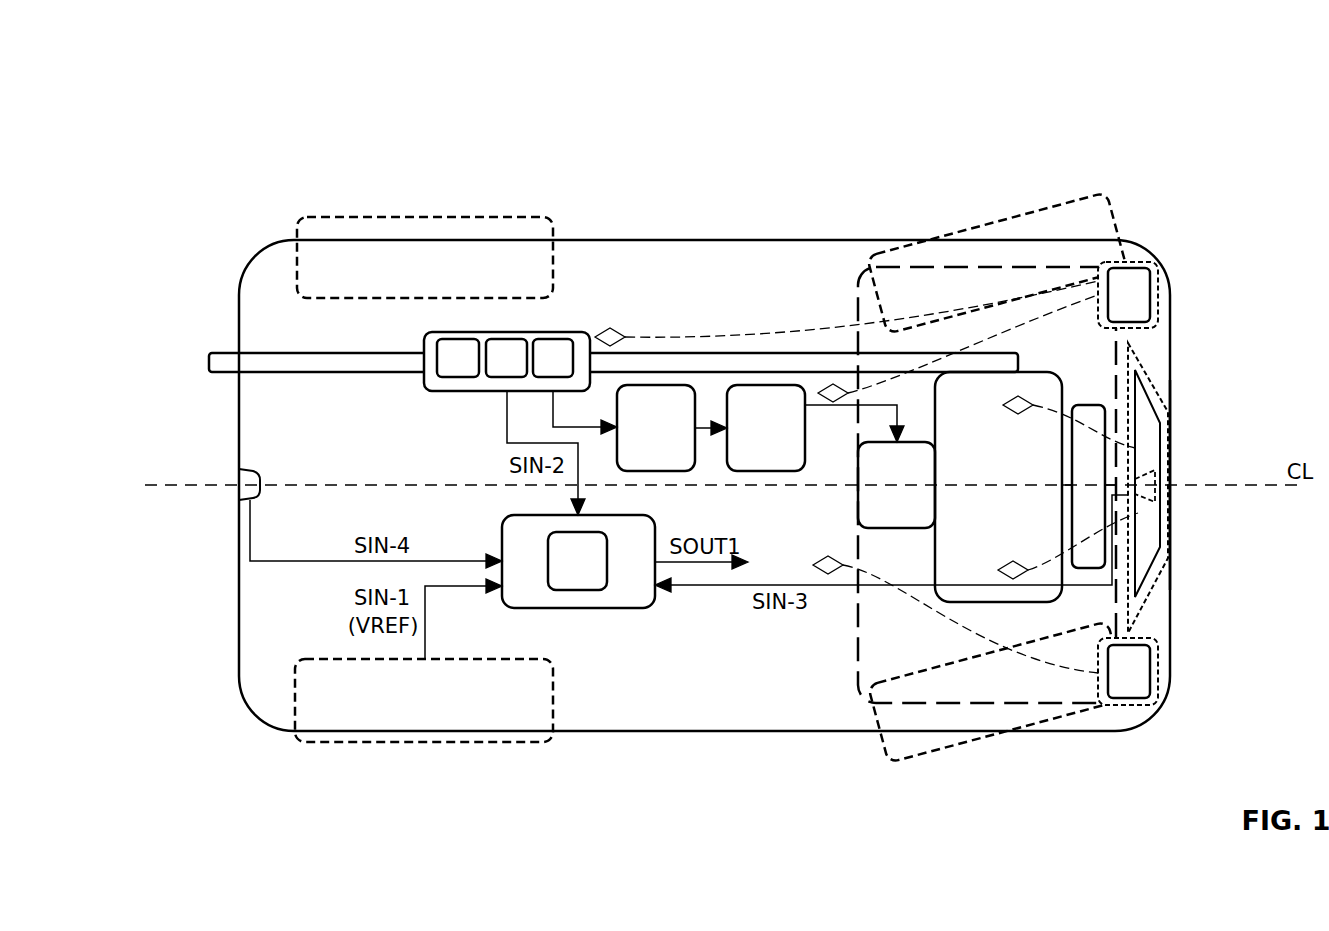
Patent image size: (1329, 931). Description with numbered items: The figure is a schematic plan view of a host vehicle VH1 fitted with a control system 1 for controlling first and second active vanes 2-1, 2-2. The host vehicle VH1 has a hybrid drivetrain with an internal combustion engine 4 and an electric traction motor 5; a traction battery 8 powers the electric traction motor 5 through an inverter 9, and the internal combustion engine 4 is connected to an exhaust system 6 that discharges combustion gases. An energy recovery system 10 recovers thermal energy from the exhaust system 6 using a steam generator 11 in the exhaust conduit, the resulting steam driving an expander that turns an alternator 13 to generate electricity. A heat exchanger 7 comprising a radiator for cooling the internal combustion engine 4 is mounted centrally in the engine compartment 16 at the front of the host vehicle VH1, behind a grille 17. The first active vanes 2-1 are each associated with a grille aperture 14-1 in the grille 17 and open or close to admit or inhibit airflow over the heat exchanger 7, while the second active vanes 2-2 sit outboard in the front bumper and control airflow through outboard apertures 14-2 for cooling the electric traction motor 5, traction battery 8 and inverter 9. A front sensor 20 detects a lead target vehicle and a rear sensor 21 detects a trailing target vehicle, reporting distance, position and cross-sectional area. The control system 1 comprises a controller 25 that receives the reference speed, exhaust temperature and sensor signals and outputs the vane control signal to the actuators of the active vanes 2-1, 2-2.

The host vehicle VH1 is at (504, 168).
The control system 1 is at (567, 626).
The first active vane 2-1 is at (1163, 400).
The second active vane 2-2 is at (1153, 279).
The internal combustion engine 4 is at (991, 496).
The electric traction motor 5 is at (889, 496).
The exhaust system 6 is at (669, 330).
The heat exchanger 7 is at (1081, 496).
The traction battery 8 is at (648, 439).
The inverter 9 is at (758, 439).
The energy recovery system 10 is at (563, 315).
The steam generator 11 is at (446, 374).
The alternator 13 is at (541, 374).
The grille aperture 14-1 is at (1148, 390).
The outboard aperture 14-2 is at (1162, 293).
The engine compartment 16 is at (985, 262).
The grille 17 is at (1188, 530).
The front sensor 20 is at (1150, 484).
The rear sensor 21 is at (214, 471).
The controller 25 is at (590, 572).